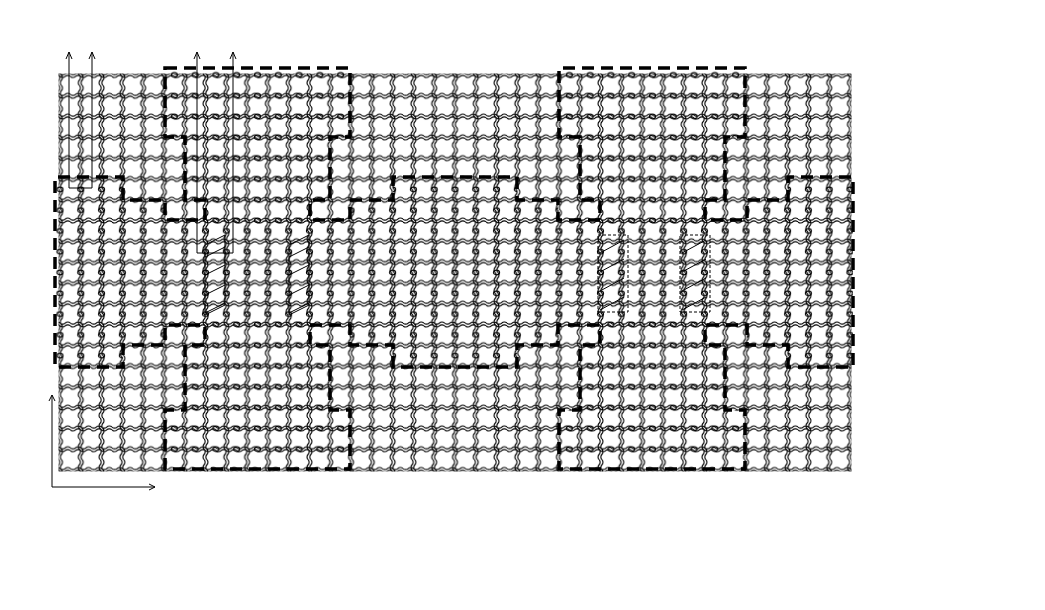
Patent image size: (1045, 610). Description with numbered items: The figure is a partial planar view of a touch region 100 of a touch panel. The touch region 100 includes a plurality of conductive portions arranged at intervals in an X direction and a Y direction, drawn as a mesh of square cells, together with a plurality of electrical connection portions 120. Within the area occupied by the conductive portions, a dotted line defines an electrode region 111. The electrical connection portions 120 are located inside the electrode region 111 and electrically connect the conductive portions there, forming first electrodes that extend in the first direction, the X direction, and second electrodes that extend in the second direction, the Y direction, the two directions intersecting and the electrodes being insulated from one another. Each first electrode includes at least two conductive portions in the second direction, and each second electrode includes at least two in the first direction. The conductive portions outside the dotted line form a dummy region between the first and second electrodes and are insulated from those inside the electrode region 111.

The touch region 100 is at (489, 300).
The electrode region 111 is at (852, 193).
The electrical connection portion 120 is at (608, 92).